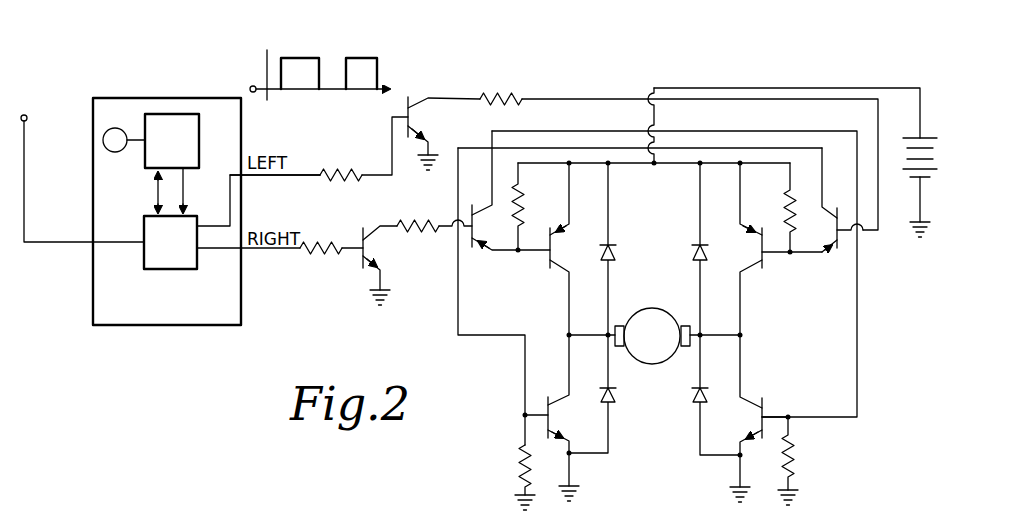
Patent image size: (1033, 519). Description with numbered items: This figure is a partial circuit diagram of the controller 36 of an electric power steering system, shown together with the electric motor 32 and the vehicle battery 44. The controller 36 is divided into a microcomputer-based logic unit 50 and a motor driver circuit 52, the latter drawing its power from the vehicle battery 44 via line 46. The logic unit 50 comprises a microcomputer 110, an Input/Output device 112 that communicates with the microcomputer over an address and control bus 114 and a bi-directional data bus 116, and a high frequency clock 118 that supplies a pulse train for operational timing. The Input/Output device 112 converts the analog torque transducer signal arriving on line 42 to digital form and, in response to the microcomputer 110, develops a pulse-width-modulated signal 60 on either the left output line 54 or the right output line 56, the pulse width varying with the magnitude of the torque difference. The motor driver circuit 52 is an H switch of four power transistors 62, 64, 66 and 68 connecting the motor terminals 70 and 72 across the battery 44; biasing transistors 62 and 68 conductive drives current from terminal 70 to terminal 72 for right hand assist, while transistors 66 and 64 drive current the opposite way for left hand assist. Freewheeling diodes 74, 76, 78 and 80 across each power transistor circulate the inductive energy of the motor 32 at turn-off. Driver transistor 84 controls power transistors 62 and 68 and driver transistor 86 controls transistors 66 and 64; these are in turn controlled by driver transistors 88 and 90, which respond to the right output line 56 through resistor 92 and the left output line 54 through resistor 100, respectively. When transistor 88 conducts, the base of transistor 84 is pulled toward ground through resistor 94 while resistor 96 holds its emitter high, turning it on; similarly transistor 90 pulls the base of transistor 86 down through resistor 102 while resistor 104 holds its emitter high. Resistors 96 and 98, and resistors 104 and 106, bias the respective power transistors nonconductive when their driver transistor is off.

The electric motor 32 is at (655, 366).
The controller 36 is at (236, 68).
The line 42 is at (25, 192).
The vehicle battery 44 is at (925, 136).
The line 46 is at (770, 88).
The microcomputer-based logic unit 50 is at (150, 328).
The motor driver circuit 52 is at (441, 79).
The left output line 54 is at (272, 178).
The right output line 56 is at (262, 250).
The pulse-width-modulated signal 60 is at (313, 58).
The power transistor 62 is at (552, 264).
The power transistor 64 is at (550, 404).
The power transistor 66 is at (762, 266).
The power transistor 68 is at (764, 410).
The motor terminal 70 is at (618, 325).
The motor terminal 72 is at (702, 336).
The diode 74 is at (617, 259).
The diode 76 is at (611, 410).
The diode 78 is at (698, 242).
The diode 80 is at (697, 406).
The driver transistor 84 is at (468, 252).
The driver transistor 86 is at (829, 252).
The driver transistor 88 is at (367, 262).
The driver transistor 90 is at (414, 140).
The resistor 92 is at (315, 247).
The resistor 94 is at (420, 236).
The resistor 96 is at (525, 230).
The resistor 98 is at (800, 462).
The resistor 100 is at (366, 156).
The resistor 102 is at (500, 96).
The resistor 104 is at (786, 228).
The resistor 106 is at (519, 462).
The microcomputer 110 is at (199, 141).
The Input/Output device 112 is at (165, 270).
The address and control bus 114 is at (184, 180).
The bi-directional data bus 116 is at (155, 190).
The high frequency clock 118 is at (120, 128).